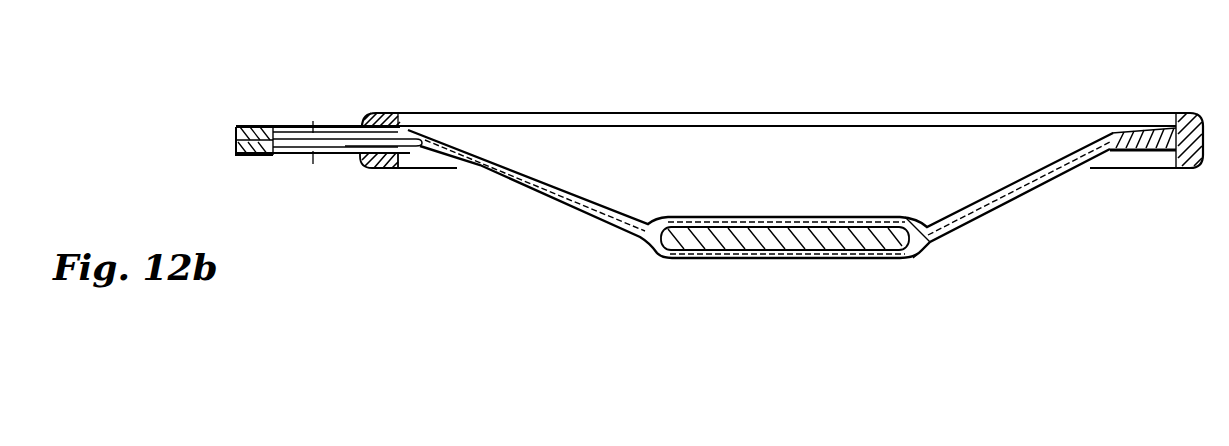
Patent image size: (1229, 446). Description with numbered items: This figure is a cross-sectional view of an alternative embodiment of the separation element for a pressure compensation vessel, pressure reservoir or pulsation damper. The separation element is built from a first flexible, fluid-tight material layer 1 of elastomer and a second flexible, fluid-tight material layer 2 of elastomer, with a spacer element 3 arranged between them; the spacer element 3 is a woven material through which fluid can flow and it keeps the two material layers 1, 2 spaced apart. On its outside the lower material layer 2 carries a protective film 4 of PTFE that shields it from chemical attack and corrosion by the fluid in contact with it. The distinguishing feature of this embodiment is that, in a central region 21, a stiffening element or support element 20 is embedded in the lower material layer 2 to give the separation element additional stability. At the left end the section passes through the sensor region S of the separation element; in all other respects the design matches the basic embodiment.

The first flexible, fluid-tight material layer 1 is at (1048, 165).
The second flexible, fluid-tight material layer 2 is at (1003, 207).
The spacer element 3 is at (1077, 167).
The protective film 4 is at (923, 245).
The stiffening element or support element 20 is at (752, 258).
The central region 21 is at (870, 260).
The sensor region S is at (325, 195).